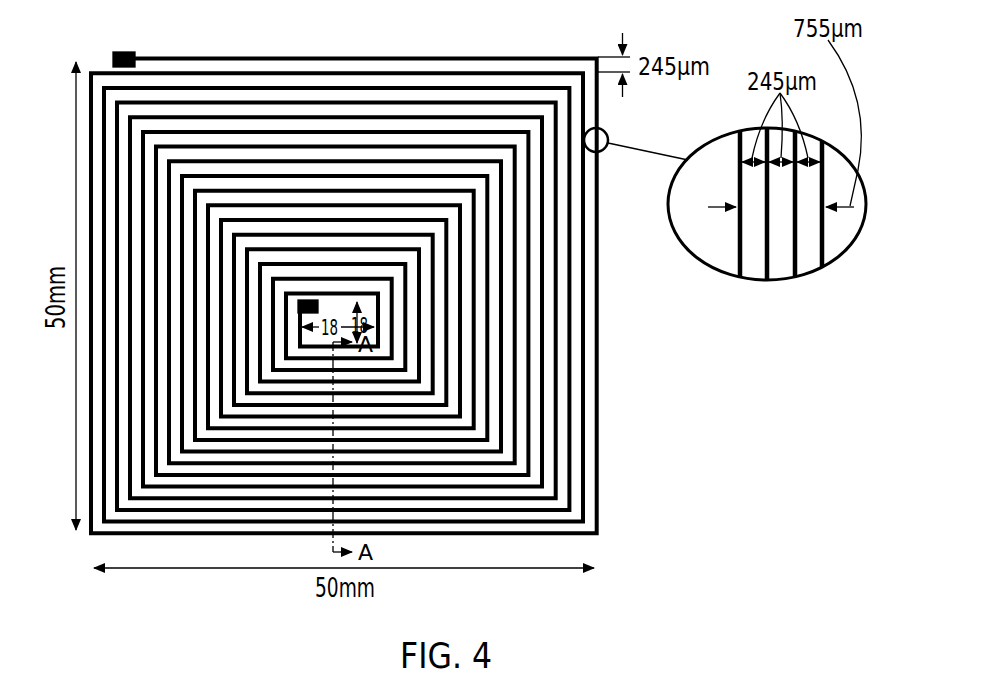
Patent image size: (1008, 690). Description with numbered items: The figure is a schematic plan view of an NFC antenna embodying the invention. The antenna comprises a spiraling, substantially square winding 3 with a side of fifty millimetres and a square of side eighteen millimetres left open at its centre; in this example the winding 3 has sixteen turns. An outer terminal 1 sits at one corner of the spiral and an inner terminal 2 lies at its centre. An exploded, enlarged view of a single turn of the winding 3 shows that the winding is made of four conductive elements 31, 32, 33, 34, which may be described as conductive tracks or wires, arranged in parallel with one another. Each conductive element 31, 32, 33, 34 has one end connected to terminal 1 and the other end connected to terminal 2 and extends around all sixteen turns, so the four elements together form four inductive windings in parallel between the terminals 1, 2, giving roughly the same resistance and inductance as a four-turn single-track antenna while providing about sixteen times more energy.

The terminal 1 is at (118, 52).
The terminal 2 is at (306, 300).
The winding 3 is at (245, 58).
The conductive element 31 is at (738, 263).
The conductive element 32 is at (765, 265).
The conductive element 33 is at (797, 265).
The conductive element 34 is at (822, 255).